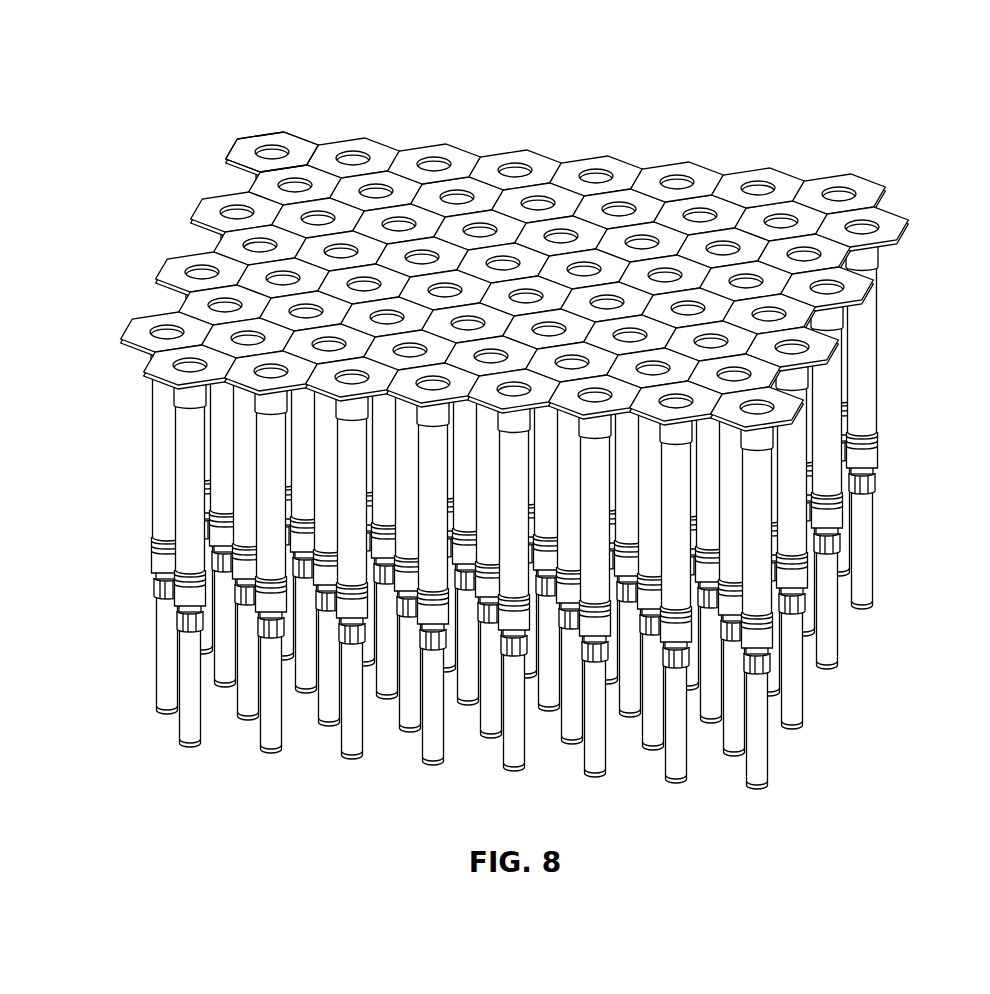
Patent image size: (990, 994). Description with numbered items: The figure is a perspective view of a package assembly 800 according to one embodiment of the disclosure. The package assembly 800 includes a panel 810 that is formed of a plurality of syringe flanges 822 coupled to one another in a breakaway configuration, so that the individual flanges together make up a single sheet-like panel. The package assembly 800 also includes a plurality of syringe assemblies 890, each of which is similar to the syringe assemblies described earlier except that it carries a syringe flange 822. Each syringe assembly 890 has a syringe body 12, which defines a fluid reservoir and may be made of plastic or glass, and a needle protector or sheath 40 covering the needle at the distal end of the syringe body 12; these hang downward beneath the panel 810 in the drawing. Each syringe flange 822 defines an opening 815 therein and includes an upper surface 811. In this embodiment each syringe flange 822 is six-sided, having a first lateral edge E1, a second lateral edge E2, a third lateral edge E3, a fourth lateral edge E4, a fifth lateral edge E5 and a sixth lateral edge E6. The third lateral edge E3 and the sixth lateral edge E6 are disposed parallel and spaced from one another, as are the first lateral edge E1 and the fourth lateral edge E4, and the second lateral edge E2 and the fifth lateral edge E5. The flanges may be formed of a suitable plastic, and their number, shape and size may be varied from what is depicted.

The package assembly 800 is at (505, 415).
The panel 810 is at (505, 241).
The upper surface 811 is at (845, 180).
The opening 815 is at (752, 192).
The syringe flange 822 is at (348, 136).
The syringe assembly 890 is at (883, 203).
The syringe body 12 is at (514, 476).
The needle protector or sheath 40 is at (828, 634).
The first lateral edge E1 is at (272, 173).
The second lateral edge E2 is at (235, 172).
The third lateral edge E3 is at (222, 145).
The fourth lateral edge E4 is at (258, 132).
The fifth lateral edge E5 is at (298, 130).
The sixth lateral edge E6 is at (318, 152).